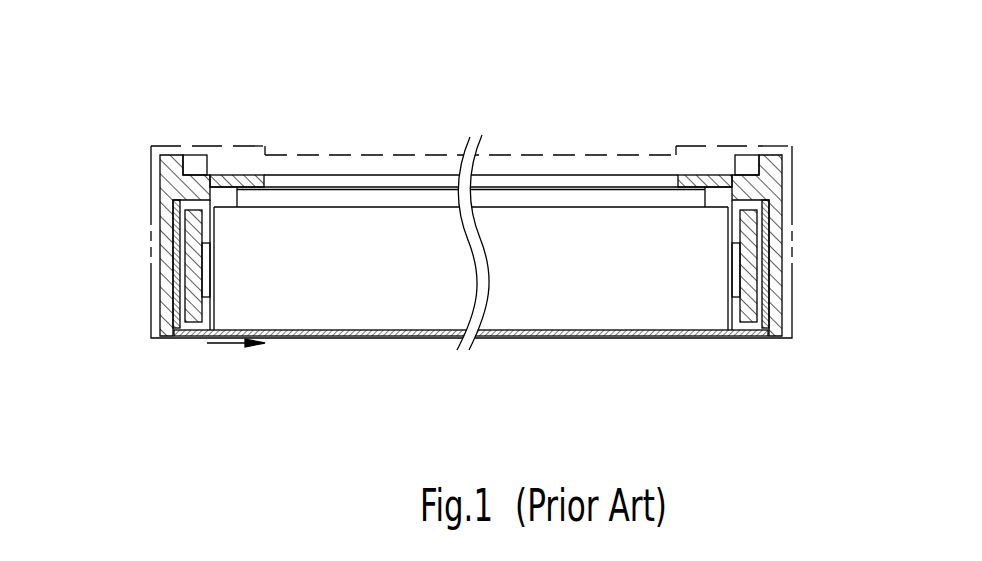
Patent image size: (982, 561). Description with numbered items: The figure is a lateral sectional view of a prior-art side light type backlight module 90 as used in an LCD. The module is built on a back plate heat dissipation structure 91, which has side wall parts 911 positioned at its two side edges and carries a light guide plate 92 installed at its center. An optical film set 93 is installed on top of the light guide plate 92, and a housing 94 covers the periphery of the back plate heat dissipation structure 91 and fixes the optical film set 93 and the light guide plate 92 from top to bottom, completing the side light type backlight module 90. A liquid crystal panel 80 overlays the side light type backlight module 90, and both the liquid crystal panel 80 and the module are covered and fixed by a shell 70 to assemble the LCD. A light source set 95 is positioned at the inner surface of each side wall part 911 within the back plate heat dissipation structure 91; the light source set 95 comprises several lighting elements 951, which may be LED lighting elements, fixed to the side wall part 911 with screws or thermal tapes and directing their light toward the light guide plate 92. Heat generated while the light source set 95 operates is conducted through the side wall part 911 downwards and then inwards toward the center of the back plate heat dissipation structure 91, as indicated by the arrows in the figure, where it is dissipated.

The shell 70 is at (220, 145).
The liquid crystal panel 80 is at (508, 163).
The side light type backlight module 90 is at (798, 212).
The back plate heat dissipation structure 91 is at (390, 333).
The light guide plate 92 is at (598, 305).
The optical film set 93 is at (563, 202).
The housing 94 is at (160, 174).
The light source set 95 is at (183, 330).
The side wall part 911 is at (162, 238).
The lighting element 951 is at (213, 257).